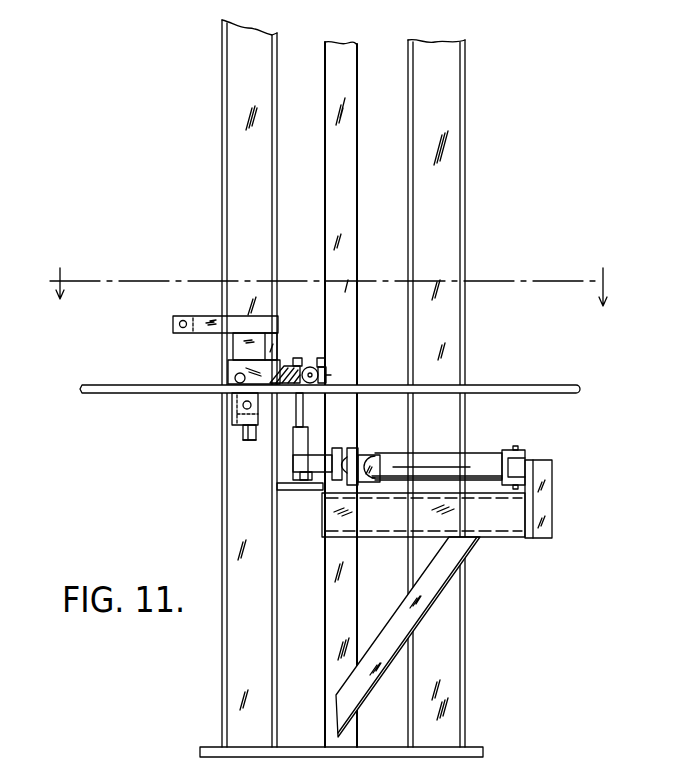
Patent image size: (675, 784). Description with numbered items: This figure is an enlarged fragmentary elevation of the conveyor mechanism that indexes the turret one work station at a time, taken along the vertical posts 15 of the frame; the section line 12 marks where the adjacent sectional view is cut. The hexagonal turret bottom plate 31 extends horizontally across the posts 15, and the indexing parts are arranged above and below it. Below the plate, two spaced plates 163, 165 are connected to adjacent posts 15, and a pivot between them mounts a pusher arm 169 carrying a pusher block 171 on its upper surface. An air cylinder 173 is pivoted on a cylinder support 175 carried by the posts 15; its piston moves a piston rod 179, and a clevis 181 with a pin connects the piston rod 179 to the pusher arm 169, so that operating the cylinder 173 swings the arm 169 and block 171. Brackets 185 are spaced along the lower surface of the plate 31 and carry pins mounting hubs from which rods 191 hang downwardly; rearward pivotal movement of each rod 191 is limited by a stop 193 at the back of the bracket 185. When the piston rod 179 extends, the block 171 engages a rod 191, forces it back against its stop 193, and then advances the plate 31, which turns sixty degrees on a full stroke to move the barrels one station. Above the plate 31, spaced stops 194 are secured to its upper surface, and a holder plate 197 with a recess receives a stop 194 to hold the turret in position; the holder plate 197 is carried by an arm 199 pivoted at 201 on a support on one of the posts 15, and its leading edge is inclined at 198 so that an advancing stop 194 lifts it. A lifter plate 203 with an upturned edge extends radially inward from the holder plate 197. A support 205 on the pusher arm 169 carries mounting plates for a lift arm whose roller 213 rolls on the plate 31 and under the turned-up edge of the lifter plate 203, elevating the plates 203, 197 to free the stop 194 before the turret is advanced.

The post 15 is at (270, 132).
The section line 12- 12 is at (332, 282).
The bottom plate 31 is at (538, 385).
The arm 199 is at (208, 316).
The pivot 201 is at (173, 325).
The inclined surface 198 is at (273, 362).
The holder plate 197 is at (233, 366).
The stop 194 is at (235, 377).
The lifter plate 203 is at (289, 364).
The roller 213 is at (318, 371).
The support 205 is at (313, 413).
The bracket 185 is at (232, 403).
The stop 193 is at (232, 421).
The rod 191 is at (241, 440).
The plate 163 is at (293, 444).
The pusher block 171 is at (298, 455).
The plate 165 is at (290, 487).
The pusher arm 169 is at (311, 472).
The clevis 181 is at (338, 450).
The piston rod 179 is at (345, 462).
The air cylinder 173 is at (450, 465).
The cylinder support 175 is at (486, 527).